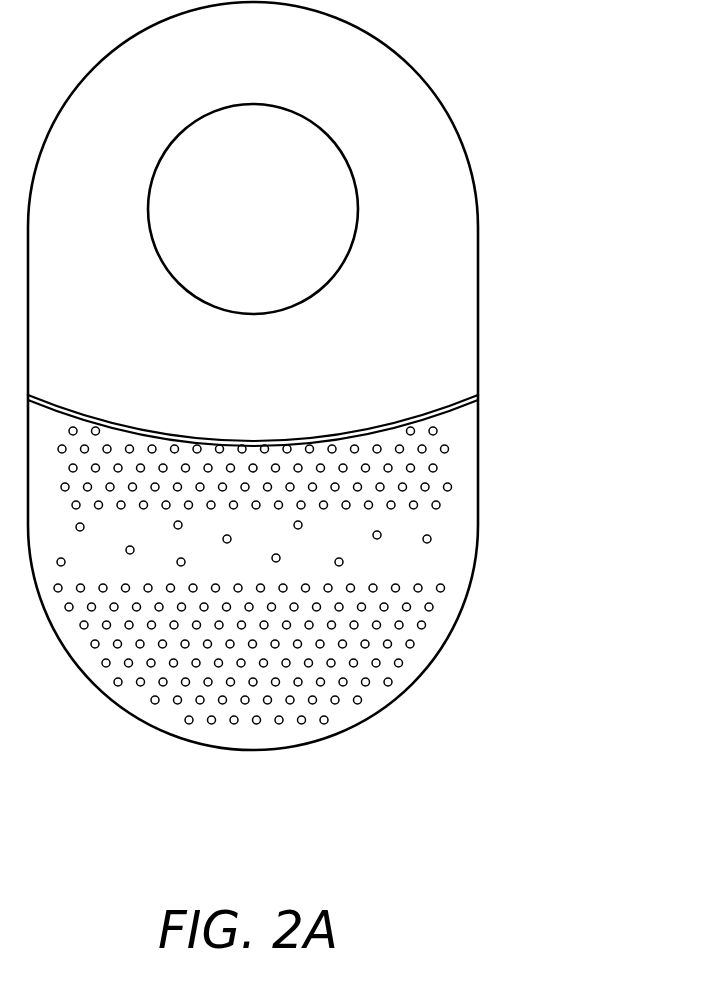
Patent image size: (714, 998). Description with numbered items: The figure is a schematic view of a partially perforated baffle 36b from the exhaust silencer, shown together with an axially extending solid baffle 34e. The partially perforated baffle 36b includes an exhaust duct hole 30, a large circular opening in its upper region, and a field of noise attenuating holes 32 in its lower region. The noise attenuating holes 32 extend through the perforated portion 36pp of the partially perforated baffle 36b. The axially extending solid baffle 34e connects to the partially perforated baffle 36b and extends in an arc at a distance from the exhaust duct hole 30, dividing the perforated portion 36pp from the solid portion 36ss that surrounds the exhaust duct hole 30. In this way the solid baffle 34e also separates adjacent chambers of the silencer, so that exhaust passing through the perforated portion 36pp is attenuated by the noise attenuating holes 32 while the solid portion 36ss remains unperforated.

The exhaust duct hole 30 is at (183, 189).
The noise attenuating holes 32 is at (411, 606).
The axially extending solid baffle 34e is at (443, 410).
The partially perforated baffle 36b is at (316, 376).
The solid portion 36ss is at (400, 92).
The perforated portion 36pp is at (300, 572).